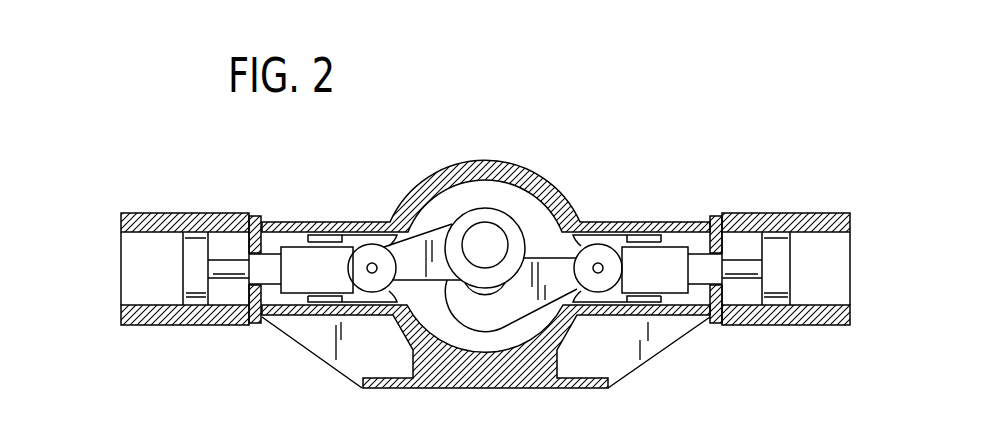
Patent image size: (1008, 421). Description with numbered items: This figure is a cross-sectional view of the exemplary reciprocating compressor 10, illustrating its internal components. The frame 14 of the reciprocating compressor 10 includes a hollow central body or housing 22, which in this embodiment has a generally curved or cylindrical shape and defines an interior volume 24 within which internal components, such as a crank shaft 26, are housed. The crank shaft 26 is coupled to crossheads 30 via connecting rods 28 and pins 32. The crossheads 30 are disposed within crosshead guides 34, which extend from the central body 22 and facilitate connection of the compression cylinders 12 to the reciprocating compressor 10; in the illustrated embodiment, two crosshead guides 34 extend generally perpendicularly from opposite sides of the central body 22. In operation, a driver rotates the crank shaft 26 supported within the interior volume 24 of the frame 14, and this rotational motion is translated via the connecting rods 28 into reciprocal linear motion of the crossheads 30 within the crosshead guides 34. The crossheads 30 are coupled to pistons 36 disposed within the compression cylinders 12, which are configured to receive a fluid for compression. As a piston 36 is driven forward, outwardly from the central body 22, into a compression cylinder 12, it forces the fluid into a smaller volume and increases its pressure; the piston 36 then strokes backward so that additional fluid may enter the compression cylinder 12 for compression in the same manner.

The reciprocating compressor 10 is at (549, 124).
The compression cylinder 12 is at (213, 213).
The frame 14 is at (532, 179).
The central body 22 is at (428, 178).
The interior volume 24 is at (486, 194).
The crank shaft 26 is at (484, 245).
The connecting rod 28 is at (410, 323).
The crosshead 30 is at (327, 253).
The pin 32 is at (371, 266).
The crosshead guide 34 is at (272, 320).
The piston 36 is at (195, 265).